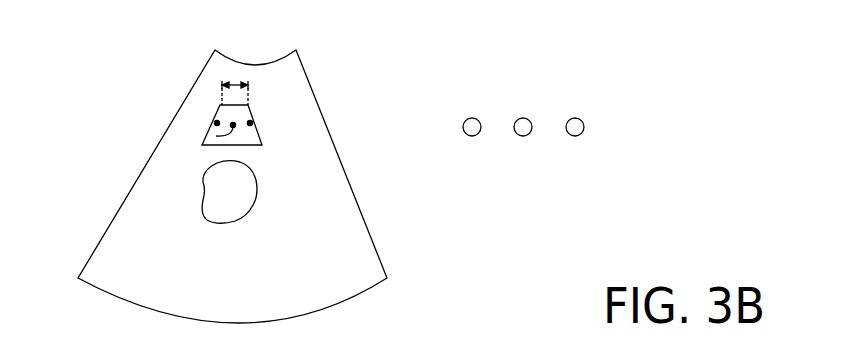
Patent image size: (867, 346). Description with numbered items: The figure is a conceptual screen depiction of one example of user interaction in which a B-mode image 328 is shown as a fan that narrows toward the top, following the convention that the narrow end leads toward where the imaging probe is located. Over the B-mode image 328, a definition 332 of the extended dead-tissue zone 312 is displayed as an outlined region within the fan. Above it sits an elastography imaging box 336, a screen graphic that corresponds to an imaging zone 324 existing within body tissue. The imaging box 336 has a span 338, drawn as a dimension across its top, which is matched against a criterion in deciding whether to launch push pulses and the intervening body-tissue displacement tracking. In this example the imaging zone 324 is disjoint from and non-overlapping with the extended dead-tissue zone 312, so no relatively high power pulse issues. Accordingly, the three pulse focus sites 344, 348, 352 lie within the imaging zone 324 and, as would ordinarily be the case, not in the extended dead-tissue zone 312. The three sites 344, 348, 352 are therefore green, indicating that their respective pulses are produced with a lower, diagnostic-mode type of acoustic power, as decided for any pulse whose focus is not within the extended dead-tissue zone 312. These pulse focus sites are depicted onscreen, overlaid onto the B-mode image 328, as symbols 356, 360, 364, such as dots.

The extended dead-tissue zone 312 is at (200, 212).
The imaging zone 324 is at (217, 103).
The B-mode image 328 is at (377, 247).
The definition of the extended dead-tissue zone 332 is at (252, 218).
The elastography imaging box 336 is at (258, 132).
The span 338 is at (230, 83).
The pulse focus site 344 is at (219, 118).
The pulse focus site 348 is at (203, 143).
The pulse focus site 352 is at (250, 112).
The symbol 356 is at (472, 118).
The symbol 360 is at (523, 118).
The symbol 364 is at (575, 118).